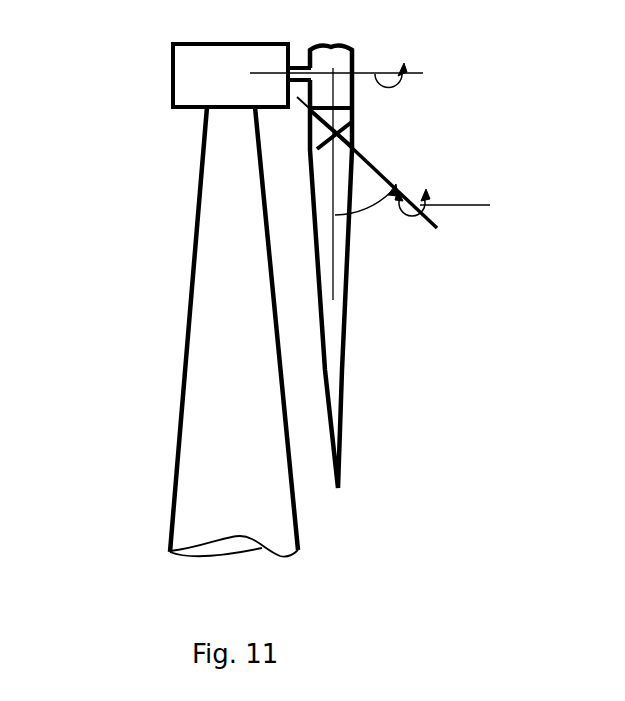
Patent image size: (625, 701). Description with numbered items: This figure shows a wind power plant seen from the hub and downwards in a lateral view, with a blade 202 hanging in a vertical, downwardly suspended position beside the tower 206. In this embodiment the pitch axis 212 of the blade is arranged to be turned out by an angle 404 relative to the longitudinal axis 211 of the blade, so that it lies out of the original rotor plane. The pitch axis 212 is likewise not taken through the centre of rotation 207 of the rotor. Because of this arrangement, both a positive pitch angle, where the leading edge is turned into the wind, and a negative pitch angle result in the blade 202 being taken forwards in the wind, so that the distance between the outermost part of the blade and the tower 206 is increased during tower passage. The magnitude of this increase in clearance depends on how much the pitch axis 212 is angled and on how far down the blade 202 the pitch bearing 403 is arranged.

The tower 206 is at (217, 255).
The blade 202 is at (342, 395).
The centre of rotation 207 is at (338, 71).
The pitch bearing 403 is at (352, 122).
The longitudinal axis 211 is at (340, 240).
The pitch axis 212 is at (468, 203).
The angle 404 is at (372, 215).